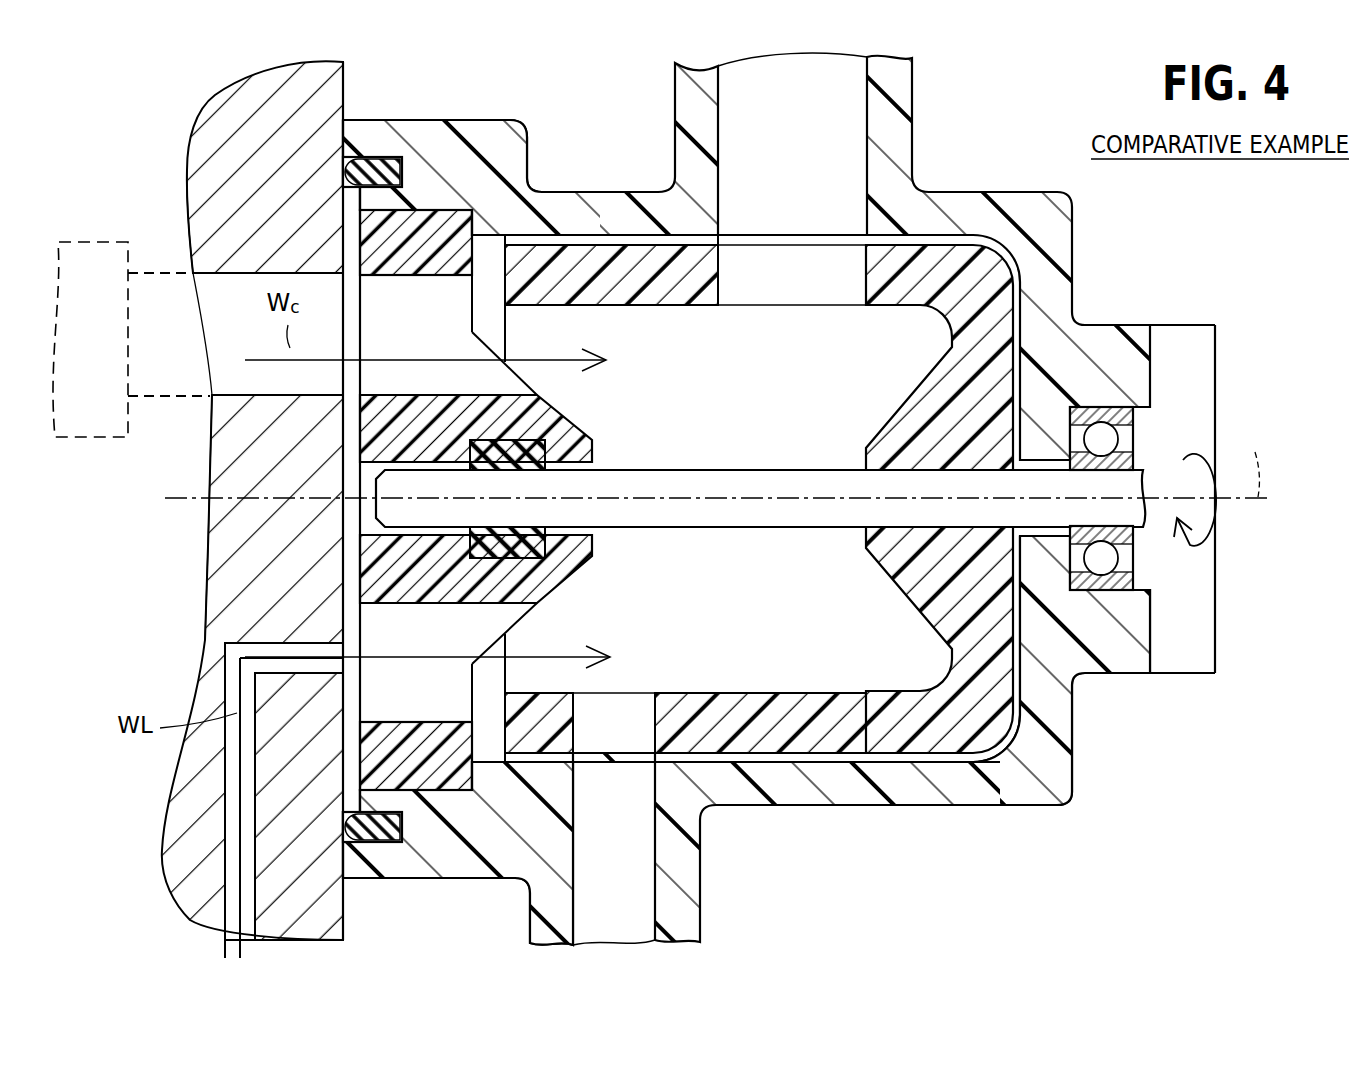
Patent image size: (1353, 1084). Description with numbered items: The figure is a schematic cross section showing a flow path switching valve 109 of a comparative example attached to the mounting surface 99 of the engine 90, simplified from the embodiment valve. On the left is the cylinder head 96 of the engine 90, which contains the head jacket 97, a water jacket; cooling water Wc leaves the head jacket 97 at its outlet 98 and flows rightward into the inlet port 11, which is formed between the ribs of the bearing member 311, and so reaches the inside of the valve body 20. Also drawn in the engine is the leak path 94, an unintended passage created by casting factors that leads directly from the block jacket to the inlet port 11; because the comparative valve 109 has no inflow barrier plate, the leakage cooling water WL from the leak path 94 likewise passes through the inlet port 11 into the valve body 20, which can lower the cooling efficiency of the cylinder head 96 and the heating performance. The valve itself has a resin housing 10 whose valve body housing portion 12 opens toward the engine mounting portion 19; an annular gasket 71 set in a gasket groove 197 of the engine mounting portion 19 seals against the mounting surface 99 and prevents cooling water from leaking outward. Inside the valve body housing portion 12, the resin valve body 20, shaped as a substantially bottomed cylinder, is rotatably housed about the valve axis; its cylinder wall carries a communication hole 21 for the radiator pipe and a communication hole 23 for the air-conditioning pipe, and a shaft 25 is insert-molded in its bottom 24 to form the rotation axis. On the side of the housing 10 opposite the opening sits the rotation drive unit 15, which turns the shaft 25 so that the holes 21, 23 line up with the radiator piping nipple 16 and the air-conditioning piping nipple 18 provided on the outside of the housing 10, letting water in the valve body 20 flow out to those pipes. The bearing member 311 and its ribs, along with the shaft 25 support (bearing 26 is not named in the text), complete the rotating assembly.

The housing 10 is at (580, 178).
The inlet port 11 is at (357, 300).
The valve body housing portion 12 is at (660, 240).
The rotation drive unit 15 is at (1133, 715).
The radiator piping nipple 16 is at (888, 113).
The air-conditioning piping nipple 18 is at (690, 885).
The engine mounting portion 19 is at (337, 147).
The valve body 20 is at (745, 675).
The communication hole 21 is at (866, 287).
The communication hole 23 is at (656, 725).
The bottom 24 is at (878, 565).
The shaft 25 is at (806, 472).
The bearing 26 is at (515, 452).
The gasket 71 is at (387, 846).
The engine 90 is at (165, 133).
The leak path 94 is at (232, 872).
The cylinder head 96 is at (215, 157).
The head jacket 97 is at (90, 262).
The outlet 98 is at (223, 322).
The mounting surface 99 is at (345, 88).
The flow path switching valve 109 is at (1038, 133).
The gasket groove 197 is at (393, 156).
The bearing member 311 is at (583, 592).